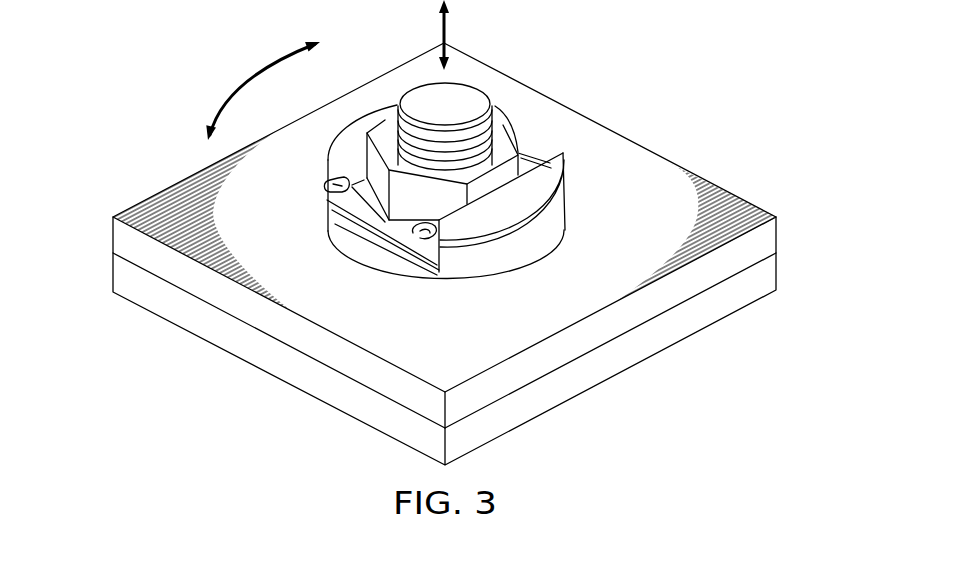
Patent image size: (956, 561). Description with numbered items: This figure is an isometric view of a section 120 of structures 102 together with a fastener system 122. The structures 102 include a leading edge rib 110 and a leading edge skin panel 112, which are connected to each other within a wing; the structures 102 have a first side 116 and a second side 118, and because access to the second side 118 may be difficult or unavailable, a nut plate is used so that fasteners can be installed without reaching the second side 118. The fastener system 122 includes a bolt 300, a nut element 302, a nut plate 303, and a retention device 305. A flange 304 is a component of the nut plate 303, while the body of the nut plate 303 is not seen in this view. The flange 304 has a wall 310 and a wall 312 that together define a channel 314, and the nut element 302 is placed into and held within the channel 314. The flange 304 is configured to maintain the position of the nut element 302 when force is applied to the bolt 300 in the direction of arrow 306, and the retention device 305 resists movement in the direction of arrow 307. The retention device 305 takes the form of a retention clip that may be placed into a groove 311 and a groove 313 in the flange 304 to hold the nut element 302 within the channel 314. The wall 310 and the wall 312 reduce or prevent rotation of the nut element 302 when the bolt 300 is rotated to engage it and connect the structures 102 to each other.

The structures 102 is at (447, 243).
The leading edge rib 110 is at (122, 233).
The leading edge skin panel 112 is at (768, 268).
The first side 116 is at (607, 363).
The second side 118 is at (645, 155).
The section 120 is at (521, 70).
The fastener system 122 is at (402, 87).
The bolt 300 is at (467, 107).
The nut element 302 is at (335, 233).
The nut plate 303 is at (550, 165).
The flange 304 is at (463, 167).
The retention device 305 is at (327, 190).
The arrow 306 is at (253, 76).
The arrow 307 is at (441, 20).
The wall 310 is at (362, 113).
The groove 311 is at (331, 181).
The wall 312 is at (470, 242).
The groove 313 is at (565, 186).
The channel 314 is at (389, 254).